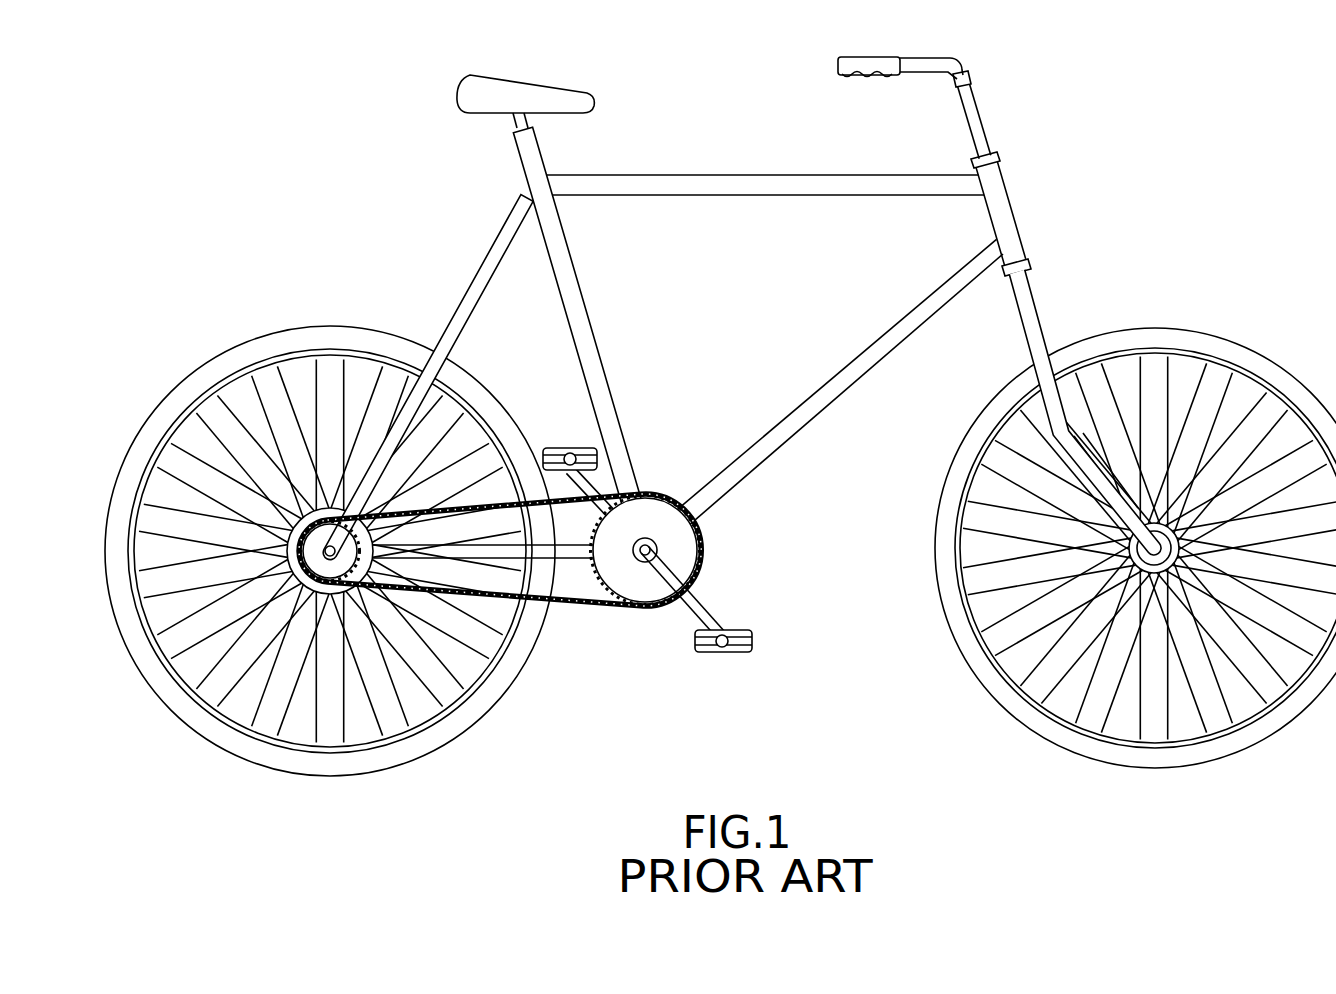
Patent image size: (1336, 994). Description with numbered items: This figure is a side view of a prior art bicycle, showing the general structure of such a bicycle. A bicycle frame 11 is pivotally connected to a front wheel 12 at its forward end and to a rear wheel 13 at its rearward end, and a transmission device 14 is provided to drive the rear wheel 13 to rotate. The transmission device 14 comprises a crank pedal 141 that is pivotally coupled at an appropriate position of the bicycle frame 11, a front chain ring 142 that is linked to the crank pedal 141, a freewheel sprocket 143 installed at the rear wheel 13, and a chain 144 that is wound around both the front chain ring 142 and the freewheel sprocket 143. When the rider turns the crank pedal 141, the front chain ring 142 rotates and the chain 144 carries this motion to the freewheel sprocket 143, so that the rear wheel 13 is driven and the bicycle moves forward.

The bicycle frame 11 is at (597, 373).
The front wheel 12 is at (955, 642).
The rear wheel 13 is at (467, 718).
The transmission device 14 is at (556, 650).
The crank pedal 141 is at (708, 644).
The front chain ring 142 is at (683, 560).
The freewheel sprocket 143 is at (318, 576).
The chain 144 is at (588, 603).